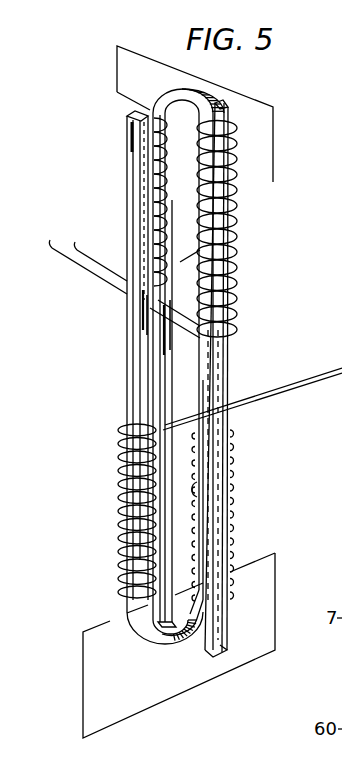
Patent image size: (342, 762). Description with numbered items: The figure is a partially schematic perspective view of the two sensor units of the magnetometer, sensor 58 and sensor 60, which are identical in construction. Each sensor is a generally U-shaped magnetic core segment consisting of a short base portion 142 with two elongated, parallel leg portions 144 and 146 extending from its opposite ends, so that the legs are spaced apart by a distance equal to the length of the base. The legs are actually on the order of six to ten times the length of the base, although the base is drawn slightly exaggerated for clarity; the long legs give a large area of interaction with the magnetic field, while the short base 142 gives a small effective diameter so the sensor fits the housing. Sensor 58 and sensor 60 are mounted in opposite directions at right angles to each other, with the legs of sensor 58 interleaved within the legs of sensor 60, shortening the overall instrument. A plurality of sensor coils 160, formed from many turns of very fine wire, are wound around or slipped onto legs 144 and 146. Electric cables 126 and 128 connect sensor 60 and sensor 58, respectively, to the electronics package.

The sensor 58 is at (239, 440).
The sensor 60 is at (126, 390).
The electric cable 126 is at (316, 367).
The electric cable 128 is at (95, 278).
The base portion 142 is at (150, 100).
The leg portion 144 is at (129, 182).
The leg portion 146 is at (230, 107).
The sensor coils 160 is at (233, 220).